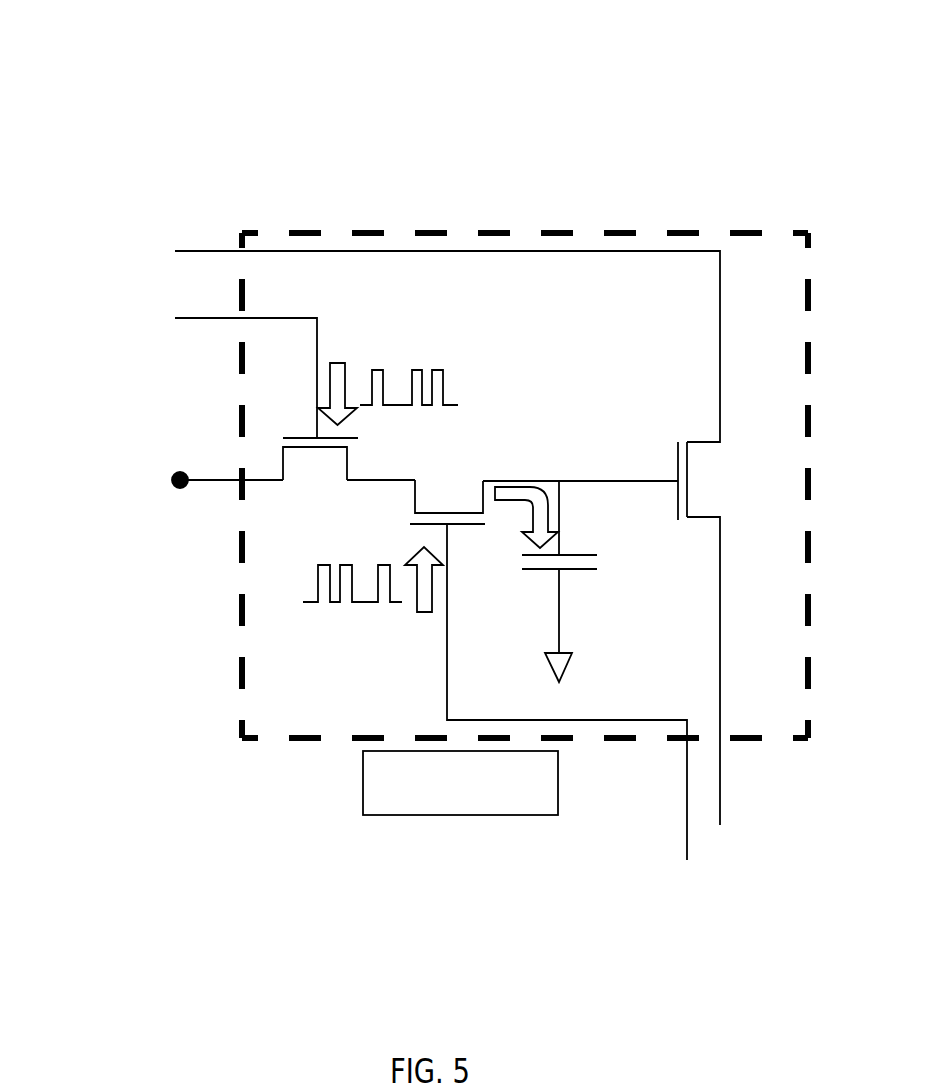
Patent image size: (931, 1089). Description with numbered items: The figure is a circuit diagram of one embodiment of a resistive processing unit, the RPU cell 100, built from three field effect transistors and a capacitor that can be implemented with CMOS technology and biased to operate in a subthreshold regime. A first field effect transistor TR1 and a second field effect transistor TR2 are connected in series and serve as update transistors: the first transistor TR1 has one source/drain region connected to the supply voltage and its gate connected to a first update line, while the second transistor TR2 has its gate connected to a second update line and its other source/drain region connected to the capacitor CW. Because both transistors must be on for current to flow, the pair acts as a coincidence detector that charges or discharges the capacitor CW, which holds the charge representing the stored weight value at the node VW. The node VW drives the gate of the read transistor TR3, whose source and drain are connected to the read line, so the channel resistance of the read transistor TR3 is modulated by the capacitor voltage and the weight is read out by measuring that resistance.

The RPU cell 100 is at (467, 66).
The first field effect transistor TR1 is at (320, 465).
The second field effect transistor TR2 is at (447, 496).
The read transistor TR3 is at (705, 481).
The weight voltage node VW is at (580, 460).
The capacitor CW is at (562, 581).